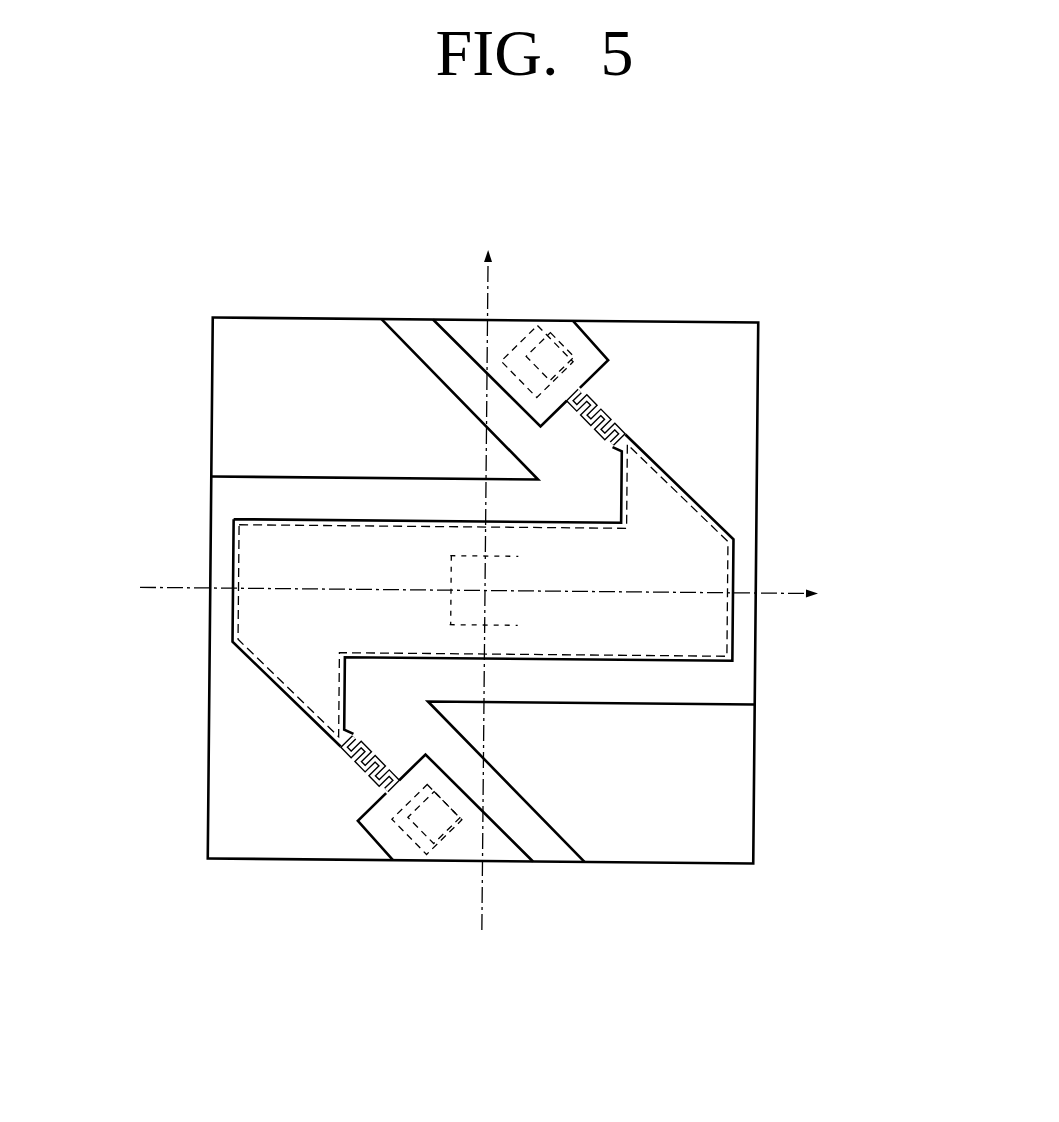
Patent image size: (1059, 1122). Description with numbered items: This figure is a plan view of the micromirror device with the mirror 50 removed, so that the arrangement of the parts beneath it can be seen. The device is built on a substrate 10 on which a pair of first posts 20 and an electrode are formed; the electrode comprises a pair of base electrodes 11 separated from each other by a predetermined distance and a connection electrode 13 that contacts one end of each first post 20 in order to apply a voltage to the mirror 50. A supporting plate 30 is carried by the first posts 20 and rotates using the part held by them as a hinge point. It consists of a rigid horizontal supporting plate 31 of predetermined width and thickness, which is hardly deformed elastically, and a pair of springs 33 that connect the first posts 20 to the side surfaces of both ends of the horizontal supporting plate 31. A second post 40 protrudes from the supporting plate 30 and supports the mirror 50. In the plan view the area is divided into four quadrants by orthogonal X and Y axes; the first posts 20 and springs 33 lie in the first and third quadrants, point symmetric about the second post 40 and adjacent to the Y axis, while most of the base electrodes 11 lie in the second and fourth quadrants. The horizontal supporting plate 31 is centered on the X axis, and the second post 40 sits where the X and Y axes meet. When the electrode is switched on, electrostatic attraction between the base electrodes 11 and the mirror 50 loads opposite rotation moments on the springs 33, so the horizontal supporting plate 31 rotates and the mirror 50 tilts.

The substrate 10 is at (728, 390).
The base electrodes 11 is at (288, 352).
The connection electrode 13 is at (536, 342).
The first posts 20 is at (562, 367).
The supporting plate 30 is at (858, 447).
The horizontal supporting plate 31 is at (698, 563).
The springs 33 is at (620, 420).
The second post 40 is at (510, 617).
The mirror 50 is at (207, 775).